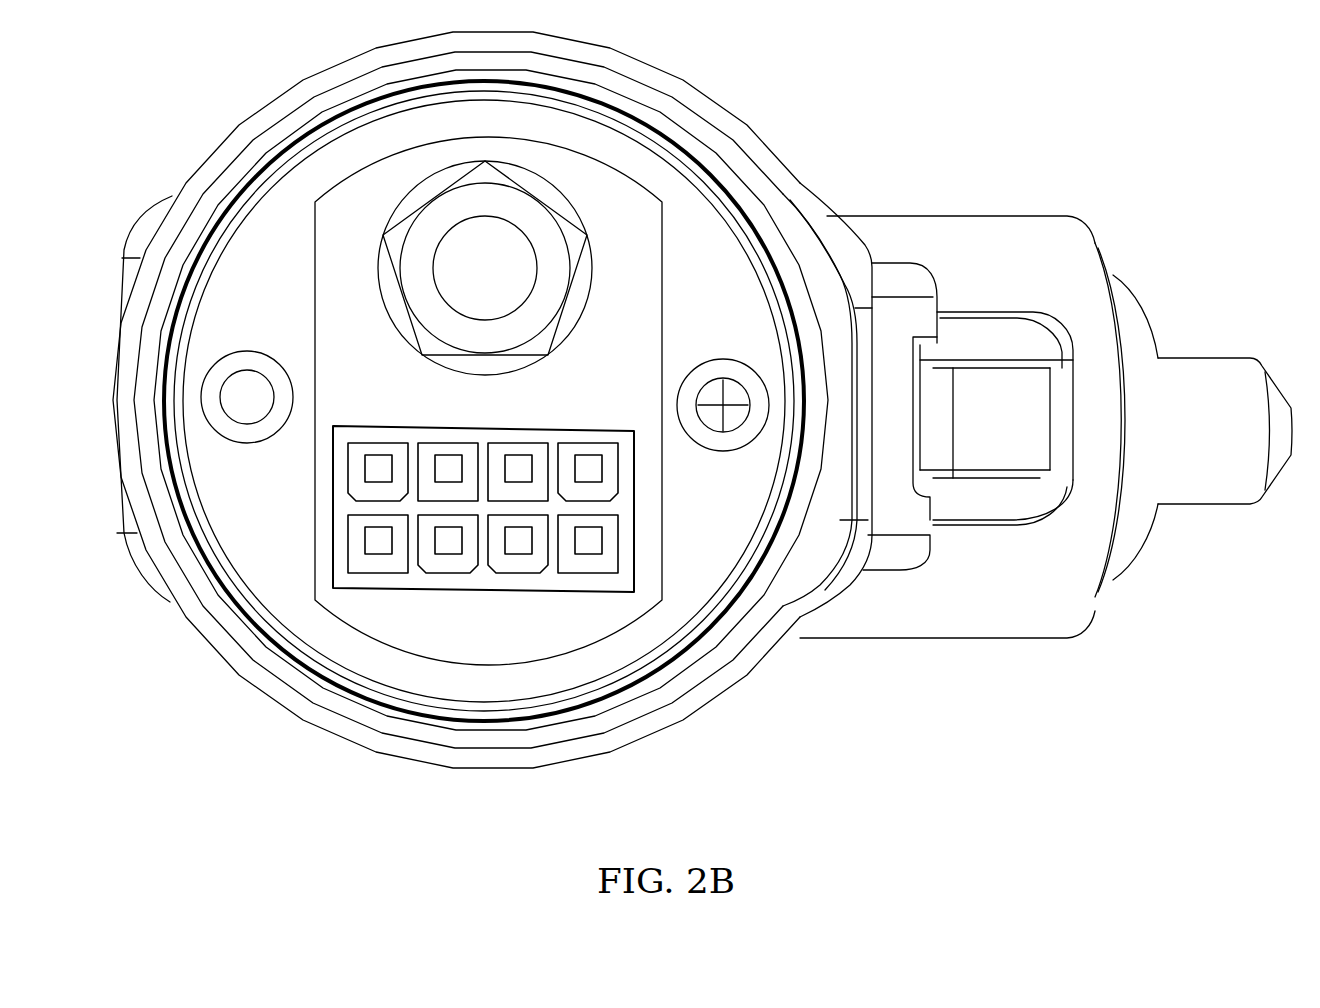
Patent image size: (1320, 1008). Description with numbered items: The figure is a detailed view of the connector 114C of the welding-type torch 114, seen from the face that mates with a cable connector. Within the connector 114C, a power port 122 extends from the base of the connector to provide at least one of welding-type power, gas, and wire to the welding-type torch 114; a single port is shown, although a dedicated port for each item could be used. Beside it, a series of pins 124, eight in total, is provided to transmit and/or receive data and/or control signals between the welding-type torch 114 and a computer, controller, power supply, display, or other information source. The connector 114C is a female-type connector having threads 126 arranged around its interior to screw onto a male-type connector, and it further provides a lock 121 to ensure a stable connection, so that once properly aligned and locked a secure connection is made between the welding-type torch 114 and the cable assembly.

The welding-type torch 114 is at (943, 216).
The connector 114C is at (236, 110).
The lock 121 is at (733, 193).
The power port 122 is at (560, 355).
The pins 124 is at (322, 506).
The threads 126 is at (213, 257).